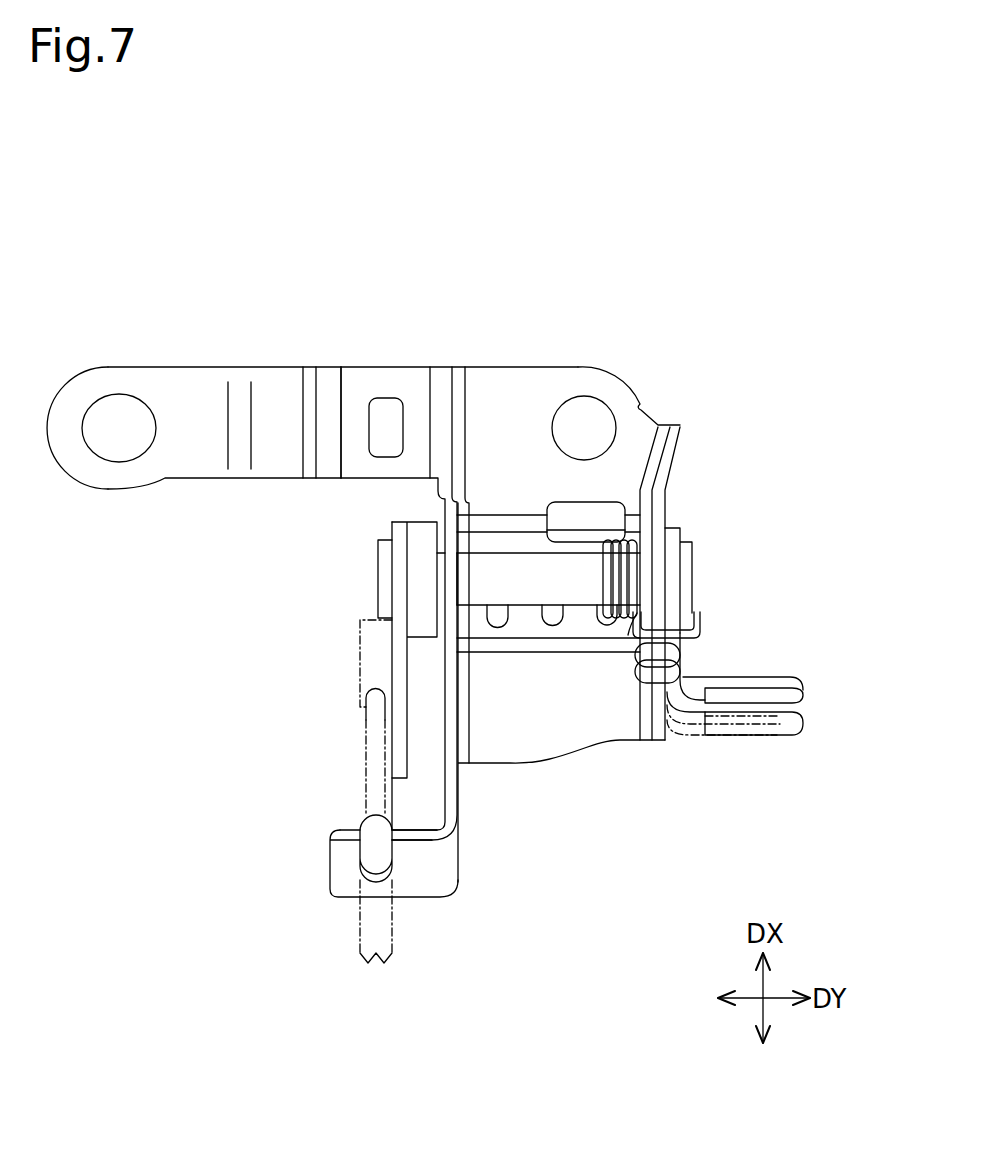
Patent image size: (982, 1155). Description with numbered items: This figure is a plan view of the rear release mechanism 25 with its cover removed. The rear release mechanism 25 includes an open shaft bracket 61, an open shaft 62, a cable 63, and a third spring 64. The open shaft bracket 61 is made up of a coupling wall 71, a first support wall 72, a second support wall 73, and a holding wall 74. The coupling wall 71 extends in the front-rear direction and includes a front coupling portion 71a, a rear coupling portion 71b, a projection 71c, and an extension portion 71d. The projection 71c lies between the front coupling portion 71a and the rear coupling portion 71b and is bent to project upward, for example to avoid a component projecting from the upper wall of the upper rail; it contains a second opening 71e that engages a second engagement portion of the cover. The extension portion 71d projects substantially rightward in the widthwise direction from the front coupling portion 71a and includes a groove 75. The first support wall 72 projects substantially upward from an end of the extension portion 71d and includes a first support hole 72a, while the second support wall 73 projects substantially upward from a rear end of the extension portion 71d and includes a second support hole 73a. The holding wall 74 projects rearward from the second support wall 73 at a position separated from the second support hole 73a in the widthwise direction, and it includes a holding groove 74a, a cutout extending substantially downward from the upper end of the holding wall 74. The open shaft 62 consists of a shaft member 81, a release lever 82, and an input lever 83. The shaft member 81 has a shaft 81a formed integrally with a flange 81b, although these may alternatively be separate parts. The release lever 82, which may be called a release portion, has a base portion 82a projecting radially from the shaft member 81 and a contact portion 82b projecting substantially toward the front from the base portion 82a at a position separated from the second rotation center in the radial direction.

The rear release mechanism 25 is at (664, 276).
The coupling wall 71 is at (278, 370).
The front coupling portion 71a is at (640, 403).
The rear coupling portion 71b is at (177, 372).
The projection 71c is at (422, 370).
The extension portion 71d is at (530, 753).
The second opening 71e is at (372, 427).
The open shaft bracket 61 is at (352, 368).
The open shaft 62 is at (480, 560).
The cable 63 is at (358, 922).
The third spring 64 is at (623, 618).
The first support wall 72 is at (657, 737).
The first support hole 72a is at (667, 553).
The second support wall 73 is at (458, 808).
The second support hole 73a is at (447, 593).
The holding wall 74 is at (413, 890).
The holding groove 74a is at (372, 827).
The groove 75 is at (500, 625).
The shaft member 81 is at (500, 562).
The shaft 81a is at (535, 560).
The flange 81b is at (417, 568).
The release lever 82 is at (803, 675).
The base portion 82a is at (680, 603).
The contact portion 82b is at (767, 675).
The input lever 83 is at (390, 532).